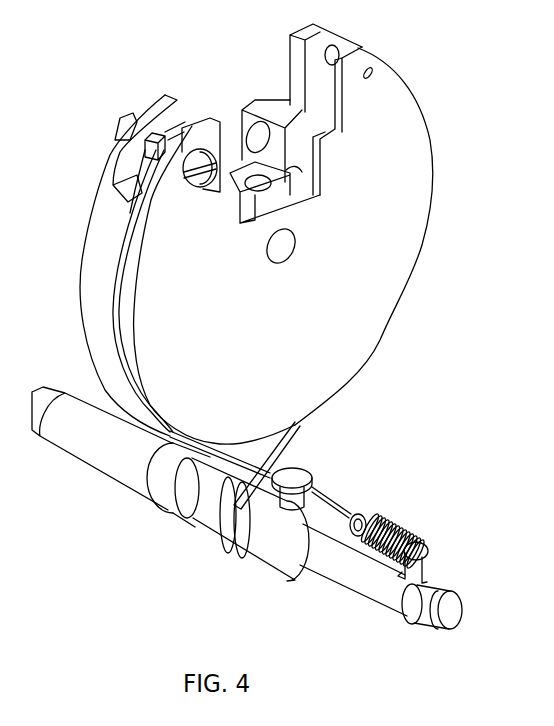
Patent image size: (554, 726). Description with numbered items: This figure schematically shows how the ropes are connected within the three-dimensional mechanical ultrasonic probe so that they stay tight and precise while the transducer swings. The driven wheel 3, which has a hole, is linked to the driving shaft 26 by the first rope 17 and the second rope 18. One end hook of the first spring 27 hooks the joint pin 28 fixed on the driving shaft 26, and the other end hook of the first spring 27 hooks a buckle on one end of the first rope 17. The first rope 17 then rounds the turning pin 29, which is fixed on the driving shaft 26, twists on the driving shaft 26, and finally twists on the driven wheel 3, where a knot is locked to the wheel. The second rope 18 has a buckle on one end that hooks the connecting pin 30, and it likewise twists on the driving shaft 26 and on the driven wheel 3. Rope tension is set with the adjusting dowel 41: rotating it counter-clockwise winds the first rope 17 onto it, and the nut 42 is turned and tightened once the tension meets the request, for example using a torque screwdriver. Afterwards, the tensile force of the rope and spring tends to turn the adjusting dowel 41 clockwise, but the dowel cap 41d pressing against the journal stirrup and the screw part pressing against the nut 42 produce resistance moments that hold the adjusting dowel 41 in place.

The driven wheel 3 is at (358, 283).
The first rope 17 is at (113, 311).
The second rope 18 is at (303, 428).
The driving shaft 26 is at (97, 450).
The first spring 27 is at (393, 524).
The joint pin 28 is at (410, 573).
The turning pin 29 is at (290, 502).
The connecting pin 30 is at (215, 458).
The adjusting dowel 41 is at (205, 142).
The dowel cap 41d is at (199, 185).
The nut 42 is at (123, 135).